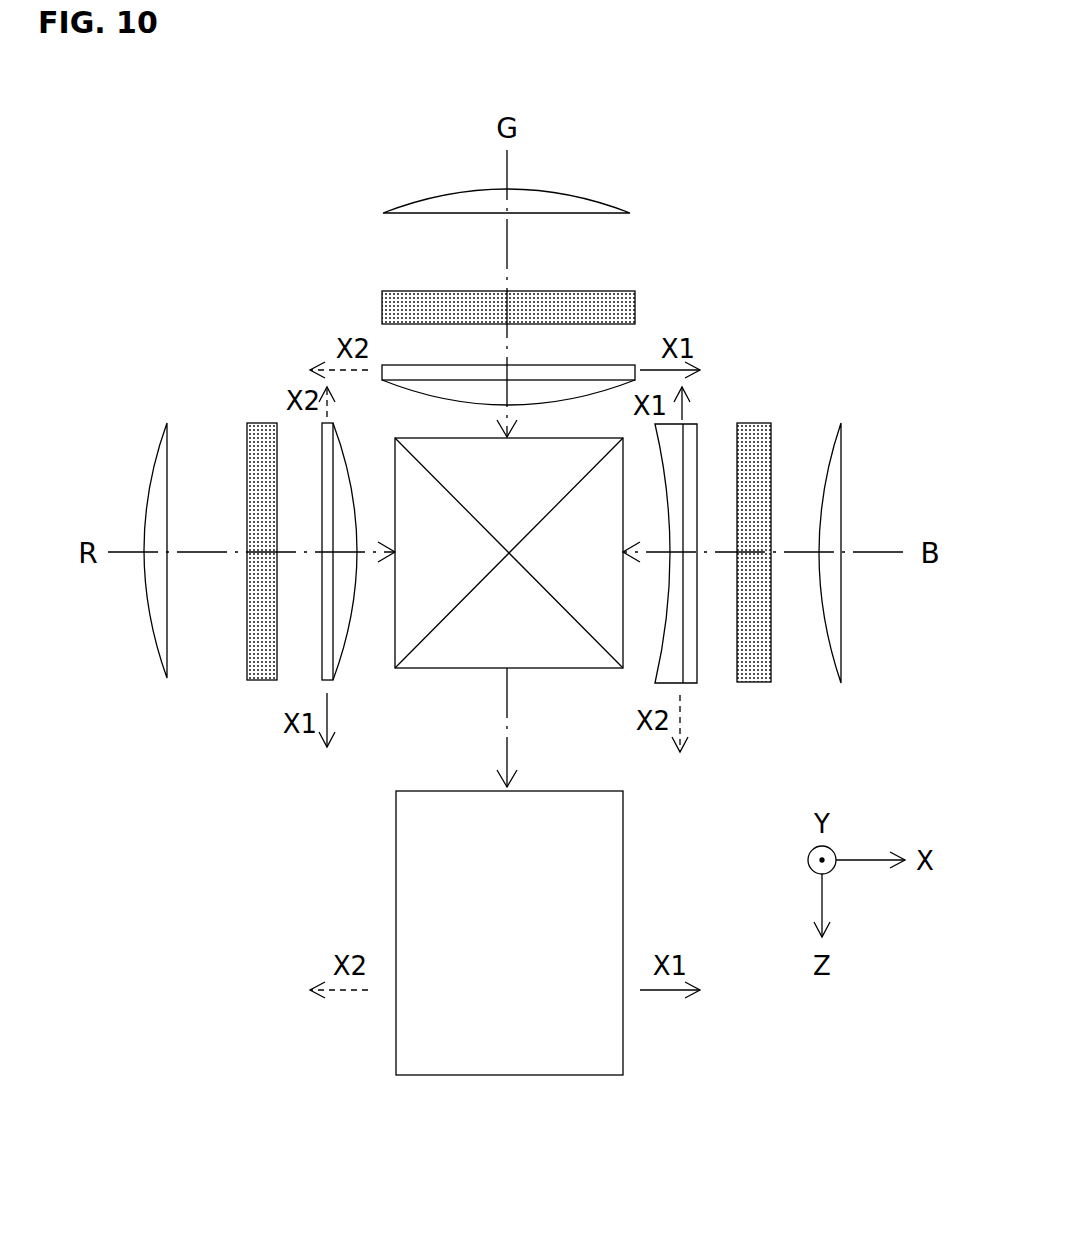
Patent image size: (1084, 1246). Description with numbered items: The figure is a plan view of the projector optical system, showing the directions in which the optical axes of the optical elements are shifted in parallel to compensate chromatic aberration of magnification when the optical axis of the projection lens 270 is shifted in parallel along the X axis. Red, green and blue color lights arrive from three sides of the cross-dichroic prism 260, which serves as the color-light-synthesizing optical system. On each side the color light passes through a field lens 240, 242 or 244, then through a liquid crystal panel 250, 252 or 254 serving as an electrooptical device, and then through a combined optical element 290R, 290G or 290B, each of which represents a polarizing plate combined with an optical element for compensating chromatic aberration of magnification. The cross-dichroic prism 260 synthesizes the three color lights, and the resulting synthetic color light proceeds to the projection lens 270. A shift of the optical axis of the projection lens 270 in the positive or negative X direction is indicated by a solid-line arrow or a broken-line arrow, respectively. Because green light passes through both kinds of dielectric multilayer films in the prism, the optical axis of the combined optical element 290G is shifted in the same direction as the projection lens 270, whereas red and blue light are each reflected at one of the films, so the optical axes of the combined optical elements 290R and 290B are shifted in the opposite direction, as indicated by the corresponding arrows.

The field lens 240 is at (155, 460).
The field lens 242 is at (605, 208).
The field lens 244 is at (841, 460).
The liquid crystal panel 250 is at (245, 440).
The liquid crystal panel 252 is at (617, 289).
The liquid crystal panel 254 is at (760, 422).
The cross-dichroic prism 260 is at (485, 670).
The projection lens 270 is at (623, 880).
The combined optical element 290R is at (340, 660).
The combined optical element 290G is at (628, 365).
The combined optical element 290B is at (697, 670).